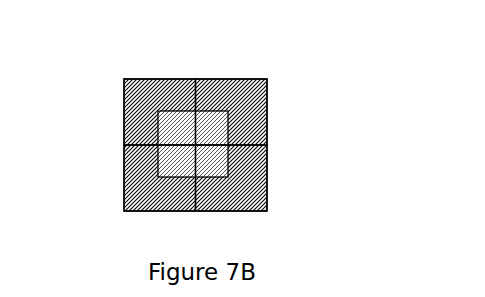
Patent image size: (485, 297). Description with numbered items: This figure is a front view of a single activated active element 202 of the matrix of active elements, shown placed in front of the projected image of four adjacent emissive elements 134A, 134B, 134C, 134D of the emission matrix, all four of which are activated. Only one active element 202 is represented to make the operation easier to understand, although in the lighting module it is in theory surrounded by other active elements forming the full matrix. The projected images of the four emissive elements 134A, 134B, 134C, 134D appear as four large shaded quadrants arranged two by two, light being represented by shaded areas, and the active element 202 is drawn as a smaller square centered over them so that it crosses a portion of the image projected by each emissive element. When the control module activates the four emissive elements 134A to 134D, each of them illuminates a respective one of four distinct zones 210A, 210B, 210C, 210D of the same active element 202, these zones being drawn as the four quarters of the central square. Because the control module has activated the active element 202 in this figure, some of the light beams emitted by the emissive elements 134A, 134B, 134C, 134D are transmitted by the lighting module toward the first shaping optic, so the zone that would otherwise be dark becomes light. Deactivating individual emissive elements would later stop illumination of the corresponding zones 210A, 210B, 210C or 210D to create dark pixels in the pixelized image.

The active element 202 is at (195, 117).
The emissive element 134A is at (123, 123).
The emissive element 134B is at (268, 123).
The emissive element 134C is at (124, 202).
The emissive element 134D is at (268, 190).
The zone of the active element 210A is at (185, 130).
The zone of the active element 210B is at (218, 130).
The zone of the active element 210C is at (185, 166).
The zone of the active element 210D is at (218, 166).